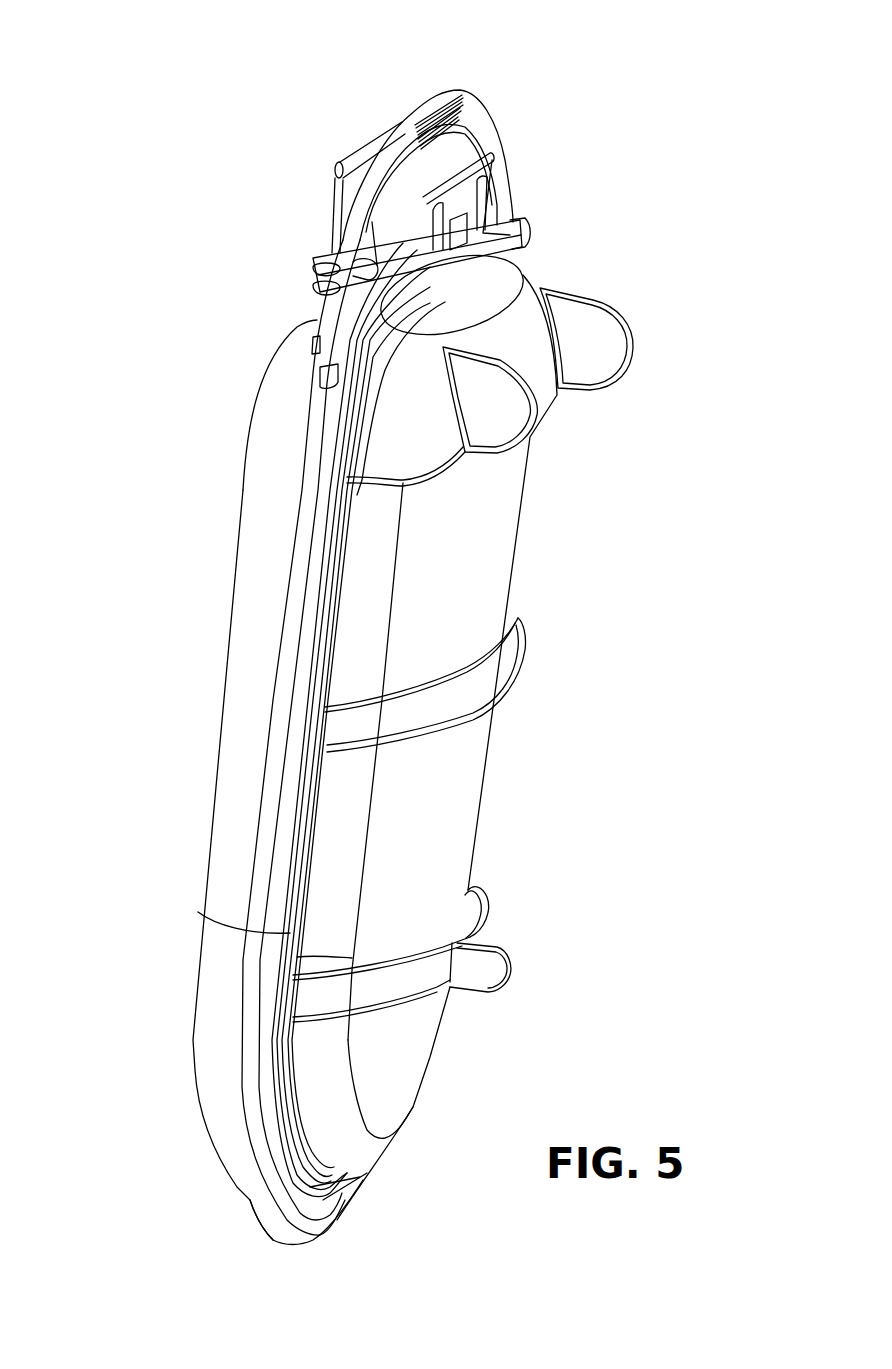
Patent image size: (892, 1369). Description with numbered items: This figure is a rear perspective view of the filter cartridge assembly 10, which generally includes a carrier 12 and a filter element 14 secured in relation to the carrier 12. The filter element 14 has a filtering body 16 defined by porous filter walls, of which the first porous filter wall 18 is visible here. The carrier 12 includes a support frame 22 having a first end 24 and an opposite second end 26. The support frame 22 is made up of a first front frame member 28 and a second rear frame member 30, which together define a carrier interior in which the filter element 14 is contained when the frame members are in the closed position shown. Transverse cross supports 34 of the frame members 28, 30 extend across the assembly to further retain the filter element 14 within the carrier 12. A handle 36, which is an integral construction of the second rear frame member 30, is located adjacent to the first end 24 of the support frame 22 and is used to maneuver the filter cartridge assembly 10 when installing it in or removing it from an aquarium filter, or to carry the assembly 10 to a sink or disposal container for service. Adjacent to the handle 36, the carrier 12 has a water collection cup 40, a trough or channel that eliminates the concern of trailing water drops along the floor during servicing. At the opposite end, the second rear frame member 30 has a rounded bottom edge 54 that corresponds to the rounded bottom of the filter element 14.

The filter cartridge assembly 10 is at (320, 108).
The carrier 12 is at (523, 228).
The filter element 14 is at (458, 848).
The filtering body 16 is at (433, 777).
The first porous filter wall 18 is at (412, 1063).
The support frame 22 is at (316, 408).
The first end 24 is at (507, 133).
The second end 26 is at (212, 1268).
The first front frame member 28 is at (240, 632).
The second rear frame member 30 is at (545, 393).
The transverse cross supports 34 is at (500, 688).
The handle 36 is at (453, 88).
The water collection cup 40 is at (532, 333).
The rounded bottom edge 54 is at (343, 1213).